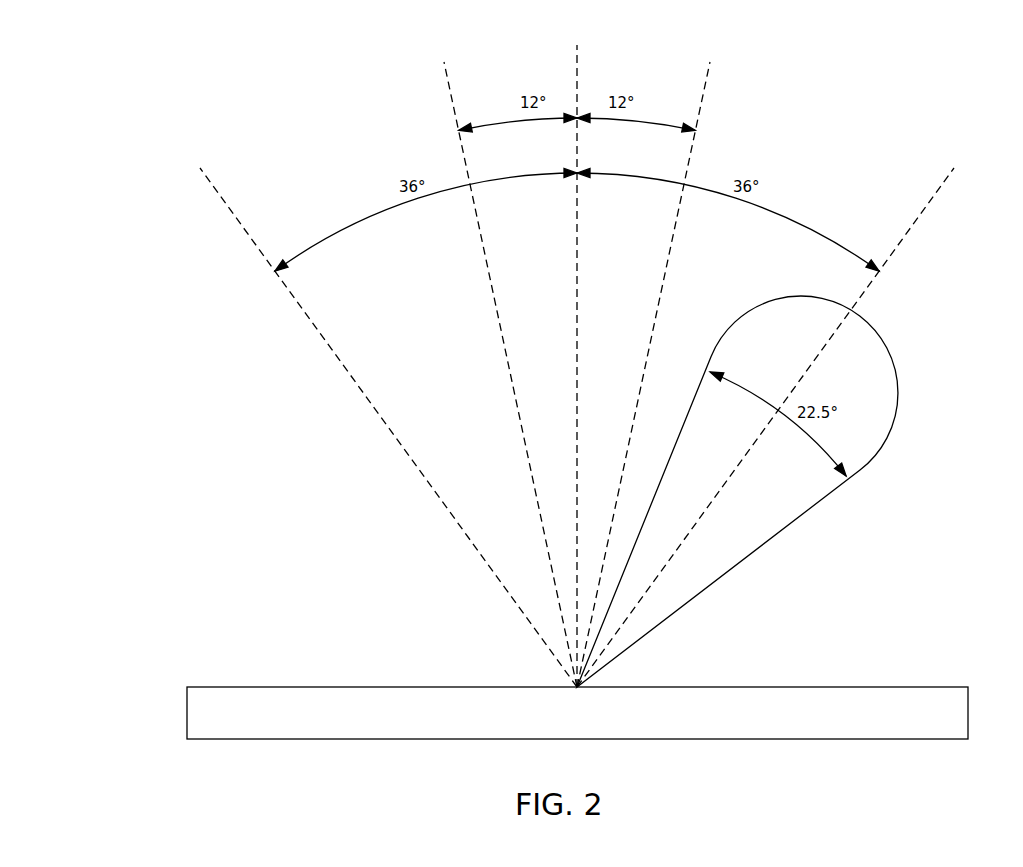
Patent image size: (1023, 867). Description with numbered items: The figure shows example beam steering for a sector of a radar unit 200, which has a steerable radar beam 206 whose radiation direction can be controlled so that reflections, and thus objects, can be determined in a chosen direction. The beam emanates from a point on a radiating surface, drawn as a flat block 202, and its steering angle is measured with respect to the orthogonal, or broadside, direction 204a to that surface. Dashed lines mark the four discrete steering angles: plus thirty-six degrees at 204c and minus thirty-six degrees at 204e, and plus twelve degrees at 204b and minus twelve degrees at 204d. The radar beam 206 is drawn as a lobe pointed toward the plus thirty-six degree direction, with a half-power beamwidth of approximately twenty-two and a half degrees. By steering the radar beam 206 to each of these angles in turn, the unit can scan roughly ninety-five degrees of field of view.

The radar unit 200 is at (143, 101).
The substrate / base surface 202 is at (309, 687).
The orthogonal direction 204a is at (566, 65).
The plus twelve degree steering angle 204b is at (718, 88).
The plus thirty-six degree steering angle 204c is at (943, 202).
The minus twelve degree steering angle 204d is at (440, 102).
The minus thirty-six degree steering angle 204e is at (213, 203).
The radar beam 206 is at (880, 331).